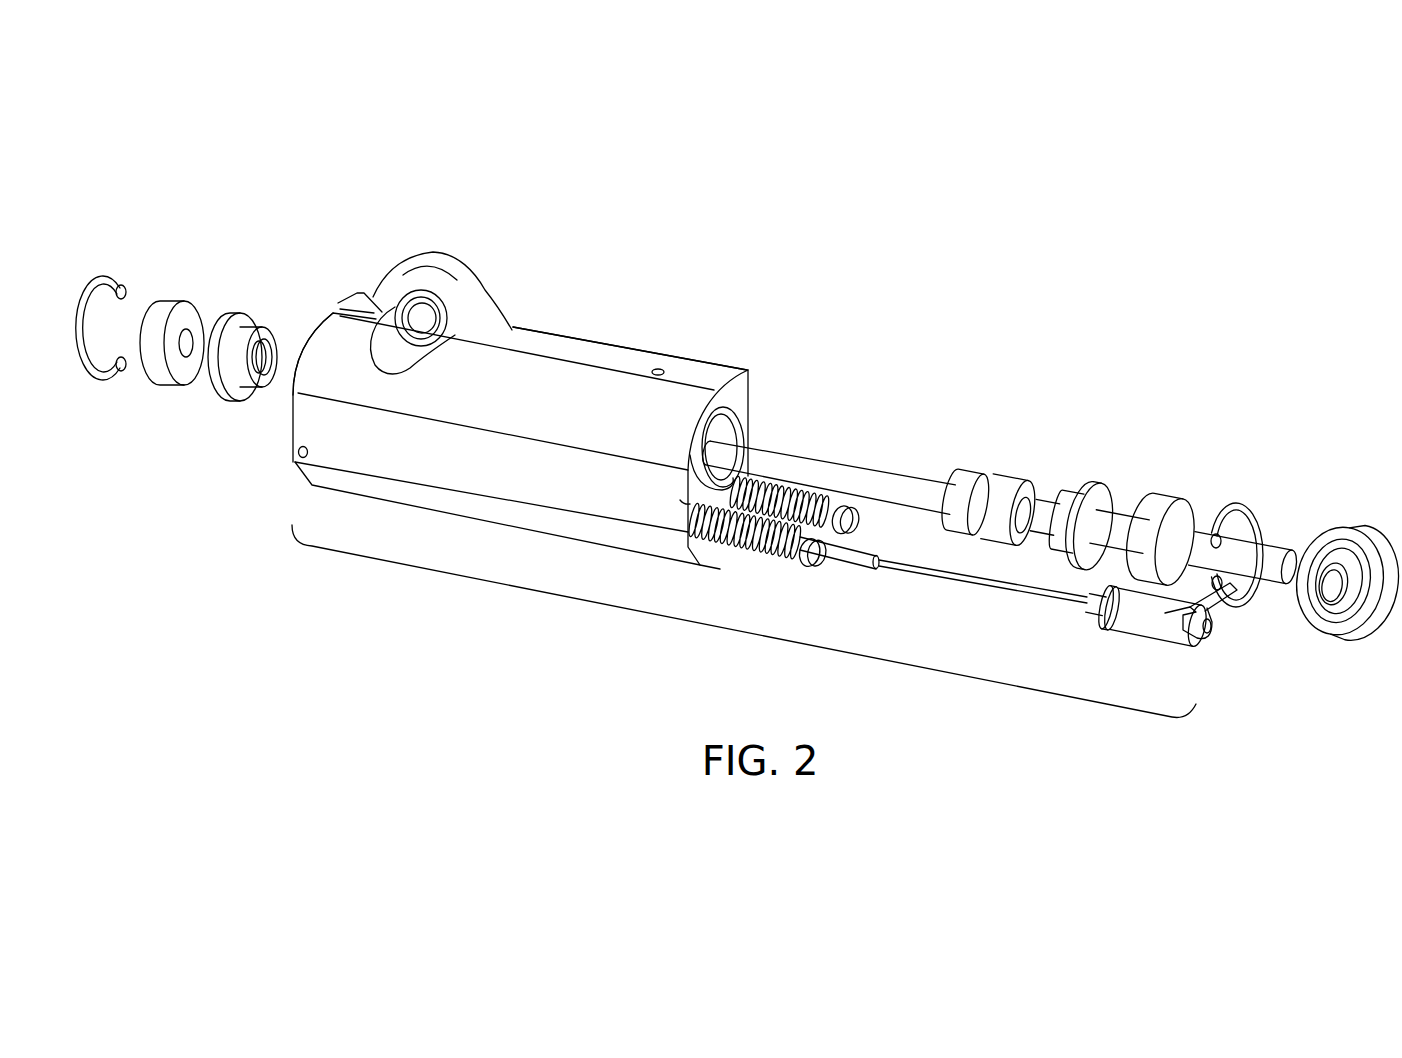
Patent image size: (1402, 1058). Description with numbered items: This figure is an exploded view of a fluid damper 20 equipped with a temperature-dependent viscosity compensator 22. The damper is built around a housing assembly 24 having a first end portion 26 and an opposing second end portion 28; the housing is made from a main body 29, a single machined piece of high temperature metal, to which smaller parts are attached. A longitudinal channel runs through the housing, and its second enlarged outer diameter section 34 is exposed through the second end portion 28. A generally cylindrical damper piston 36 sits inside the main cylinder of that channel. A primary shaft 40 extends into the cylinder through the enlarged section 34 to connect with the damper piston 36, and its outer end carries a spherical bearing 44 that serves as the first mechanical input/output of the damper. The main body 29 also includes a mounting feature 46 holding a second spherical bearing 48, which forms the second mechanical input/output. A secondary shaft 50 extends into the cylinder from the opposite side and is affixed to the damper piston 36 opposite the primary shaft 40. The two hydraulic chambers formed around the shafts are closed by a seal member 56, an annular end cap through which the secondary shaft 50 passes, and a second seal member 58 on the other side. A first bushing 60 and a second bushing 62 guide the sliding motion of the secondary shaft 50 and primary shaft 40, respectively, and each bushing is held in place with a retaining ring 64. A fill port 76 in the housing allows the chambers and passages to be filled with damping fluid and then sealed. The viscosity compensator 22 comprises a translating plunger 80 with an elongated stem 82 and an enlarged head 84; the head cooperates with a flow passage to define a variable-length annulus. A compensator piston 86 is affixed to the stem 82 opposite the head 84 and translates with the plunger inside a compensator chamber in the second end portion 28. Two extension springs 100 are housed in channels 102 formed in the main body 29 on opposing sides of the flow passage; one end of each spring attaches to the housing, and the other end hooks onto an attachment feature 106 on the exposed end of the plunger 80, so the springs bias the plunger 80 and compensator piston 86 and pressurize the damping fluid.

The fluid damper 20 is at (306, 228).
The temperature-dependent viscosity compensator 22 is at (738, 628).
The housing assembly 24 is at (605, 318).
The first end portion 26 is at (320, 332).
The second end portion 28 is at (733, 371).
The main body 29 is at (533, 331).
The second enlarged outer diameter section 34 is at (741, 430).
The damper piston 36 is at (1006, 482).
The primary shaft 40 is at (1272, 548).
The spherical bearing 44 is at (1338, 565).
The mounting feature 46 is at (403, 273).
The second spherical bearing 48 is at (447, 306).
The secondary shaft 50 is at (855, 470).
The seal member 56 is at (244, 401).
The second seal member 58 is at (1097, 480).
The first bushing 60 is at (176, 386).
The second bushing 62 is at (1162, 498).
The retaining ring 64 is at (104, 382).
The fill port 76 is at (658, 367).
The translating plunger 80 is at (1003, 606).
The elongated stem 82 is at (952, 586).
The enlarged head 84 is at (862, 571).
The compensator piston 86 is at (1158, 632).
The extension springs 100 is at (862, 524).
The channels 102 is at (690, 458).
The attachment feature 106 is at (1213, 625).